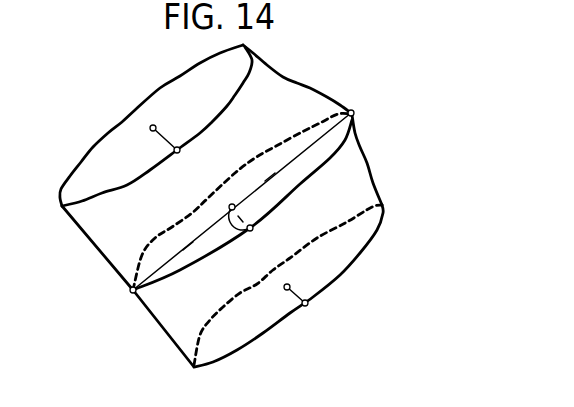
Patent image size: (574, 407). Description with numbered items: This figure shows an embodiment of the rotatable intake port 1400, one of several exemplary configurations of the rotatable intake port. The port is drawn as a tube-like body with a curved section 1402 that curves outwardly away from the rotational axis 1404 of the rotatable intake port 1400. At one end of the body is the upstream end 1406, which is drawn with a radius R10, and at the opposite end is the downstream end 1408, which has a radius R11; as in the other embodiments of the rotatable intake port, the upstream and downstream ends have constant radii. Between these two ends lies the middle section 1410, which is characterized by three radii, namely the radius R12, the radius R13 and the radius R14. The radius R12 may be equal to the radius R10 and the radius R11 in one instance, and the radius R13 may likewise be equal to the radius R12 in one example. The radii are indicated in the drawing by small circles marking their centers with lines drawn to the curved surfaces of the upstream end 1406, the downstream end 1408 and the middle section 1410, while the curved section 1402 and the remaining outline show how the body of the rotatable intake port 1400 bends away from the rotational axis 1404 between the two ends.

The rotatable intake port 1400 is at (39, 129).
The curved section 1402 is at (291, 84).
The rotational axis 1404 is at (272, 258).
The upstream end 1406 is at (118, 143).
The downstream end 1408 is at (343, 298).
The middle section 1410 is at (196, 232).
The radius of the upstream end R10 is at (163, 142).
The radius of the downstream end R11 is at (295, 297).
The first radius of the middle section R12 is at (188, 248).
The second radius of the middle section R13 is at (250, 219).
The third radius of the middle section R14 is at (270, 177).